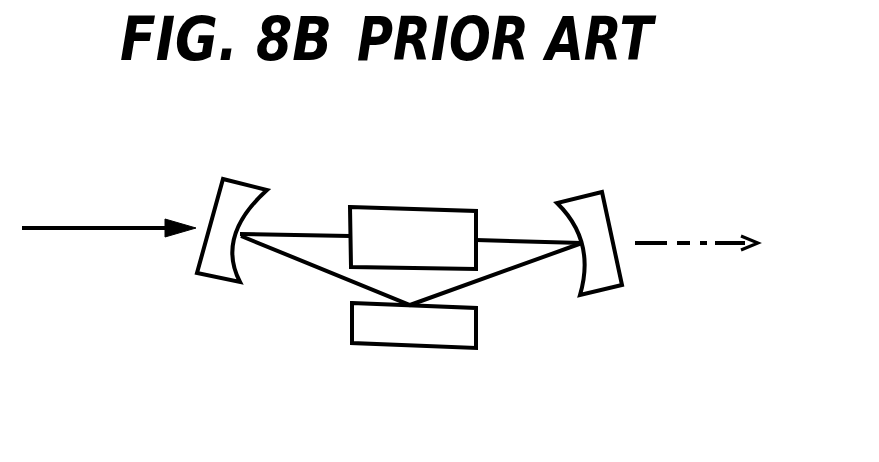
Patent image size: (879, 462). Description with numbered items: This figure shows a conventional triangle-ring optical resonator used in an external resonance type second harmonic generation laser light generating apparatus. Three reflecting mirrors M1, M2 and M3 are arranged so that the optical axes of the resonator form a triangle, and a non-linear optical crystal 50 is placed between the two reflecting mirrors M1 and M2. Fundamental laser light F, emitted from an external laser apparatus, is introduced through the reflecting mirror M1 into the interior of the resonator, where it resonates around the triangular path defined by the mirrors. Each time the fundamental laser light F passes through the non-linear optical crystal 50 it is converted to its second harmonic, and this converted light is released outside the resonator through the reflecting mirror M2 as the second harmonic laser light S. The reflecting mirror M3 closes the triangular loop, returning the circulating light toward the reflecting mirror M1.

The fundamental laser light F is at (107, 228).
The reflecting mirror M1 is at (245, 195).
The non-linear optical crystal 50 is at (440, 225).
The reflecting mirror M3 is at (432, 333).
The reflecting mirror M2 is at (588, 207).
The second harmonic laser light S is at (652, 245).